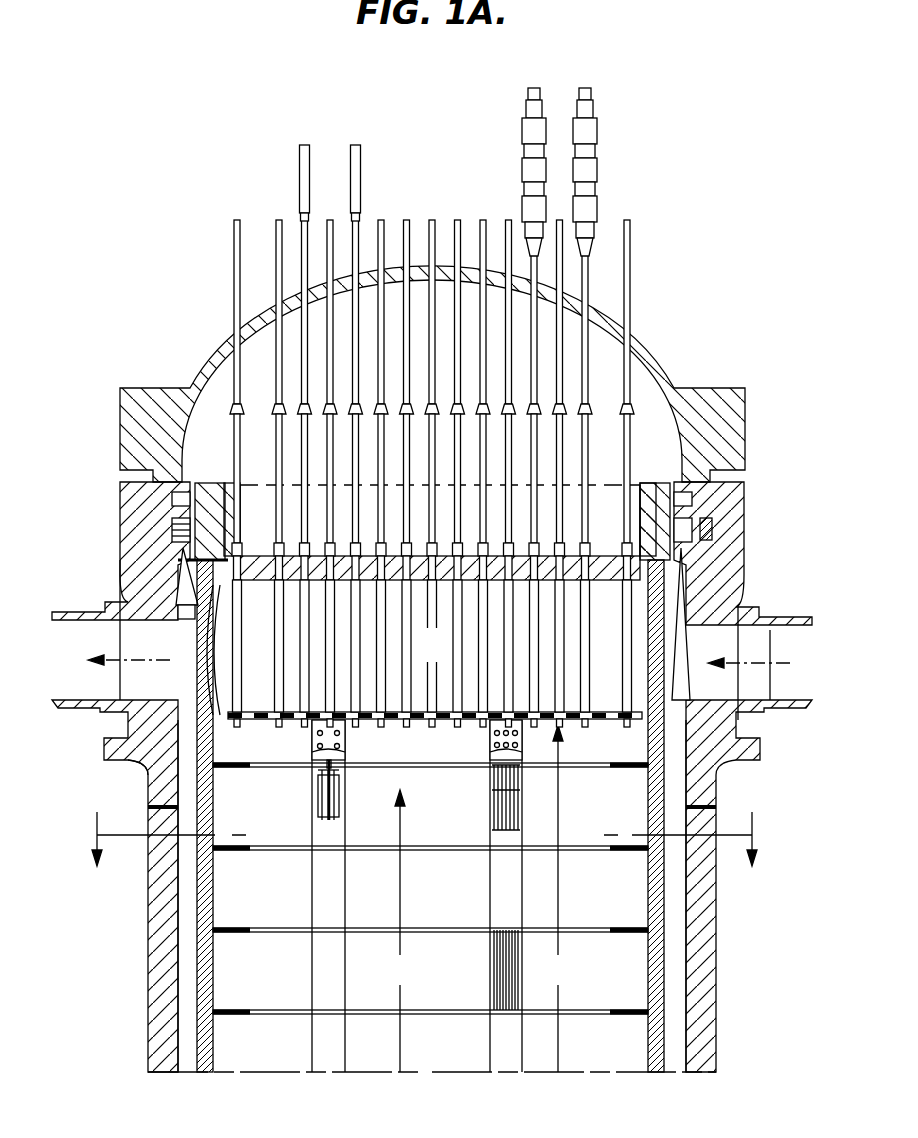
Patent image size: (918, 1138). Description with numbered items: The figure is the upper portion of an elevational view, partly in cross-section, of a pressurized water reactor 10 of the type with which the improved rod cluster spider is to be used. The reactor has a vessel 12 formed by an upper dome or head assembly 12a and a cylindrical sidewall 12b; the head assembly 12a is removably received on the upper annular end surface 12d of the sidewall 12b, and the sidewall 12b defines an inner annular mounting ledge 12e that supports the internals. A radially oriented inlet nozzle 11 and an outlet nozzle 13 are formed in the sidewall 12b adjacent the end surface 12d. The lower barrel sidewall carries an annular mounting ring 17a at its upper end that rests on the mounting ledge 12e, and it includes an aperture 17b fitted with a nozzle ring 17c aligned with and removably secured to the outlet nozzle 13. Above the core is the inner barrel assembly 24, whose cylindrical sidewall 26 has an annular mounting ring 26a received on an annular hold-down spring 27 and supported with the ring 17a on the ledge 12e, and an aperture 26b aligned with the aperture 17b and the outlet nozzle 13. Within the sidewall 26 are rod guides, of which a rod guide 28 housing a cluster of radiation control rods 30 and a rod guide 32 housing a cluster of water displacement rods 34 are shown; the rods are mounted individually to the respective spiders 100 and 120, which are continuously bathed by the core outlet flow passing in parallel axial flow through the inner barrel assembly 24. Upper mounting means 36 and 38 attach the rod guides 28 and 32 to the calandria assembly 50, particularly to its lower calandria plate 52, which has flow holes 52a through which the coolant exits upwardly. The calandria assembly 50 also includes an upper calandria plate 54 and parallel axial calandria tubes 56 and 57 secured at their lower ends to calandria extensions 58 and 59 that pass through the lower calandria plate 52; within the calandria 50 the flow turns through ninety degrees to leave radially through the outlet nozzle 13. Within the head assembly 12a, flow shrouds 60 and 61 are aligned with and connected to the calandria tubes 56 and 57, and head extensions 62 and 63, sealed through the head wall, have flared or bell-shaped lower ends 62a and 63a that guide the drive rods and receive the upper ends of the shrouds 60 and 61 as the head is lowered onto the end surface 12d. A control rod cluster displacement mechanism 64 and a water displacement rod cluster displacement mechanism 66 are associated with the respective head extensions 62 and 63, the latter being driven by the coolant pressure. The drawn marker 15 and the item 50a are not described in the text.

The pressurized water reactor 10 is at (703, 188).
The inlet nozzle 11 is at (790, 712).
The vessel 12 is at (432, 669).
The head assembly 12a is at (670, 380).
The cylindrical sidewall 12b is at (716, 946).
The annular end surface 12d is at (712, 497).
The mounting ledge 12e is at (712, 528).
The outlet nozzle 13 is at (100, 712).
The downcomer annulus 15 is at (663, 911).
The annular mounting ring 17a is at (188, 548).
The aperture 17b is at (160, 765).
The nozzle ring 17c is at (185, 615).
The inner barrel assembly 24 is at (188, 908).
The cylindrical sidewall 26 is at (213, 1038).
The annular mounting ring 26a is at (184, 494).
The aperture 26b is at (214, 678).
The hold-down spring 27 is at (180, 527).
The rod guide 28 is at (345, 872).
The radiation control rods 30 is at (342, 812).
The rod guide 32 is at (490, 872).
The water displacement rods 34 is at (494, 806).
The mounting means 36 is at (343, 722).
The mounting means 38 is at (492, 728).
The calandria assembly 50 is at (359, 423).
The upper support flange 50a is at (230, 485).
The lower calandria plate 52 is at (644, 722).
The flow holes 52a is at (597, 712).
The upper calandria plate 54 is at (270, 556).
The calandria tube 56 is at (540, 652).
The calandria tube 57 is at (355, 684).
The calandria extension 58 is at (382, 722).
The calandria extension 59 is at (300, 722).
The flow shroud 60 is at (540, 455).
The flow shroud 61 is at (349, 444).
The head extension 62 is at (566, 298).
The flared lower end 62a is at (530, 398).
The head extension 63 is at (354, 222).
The flared lower end 63a is at (353, 405).
The control rod cluster displacement mechanism 64 is at (534, 88).
The water displacement rod cluster displacement mechanism 66 is at (305, 145).
The spider 100 is at (440, 785).
The spider 120 is at (490, 772).